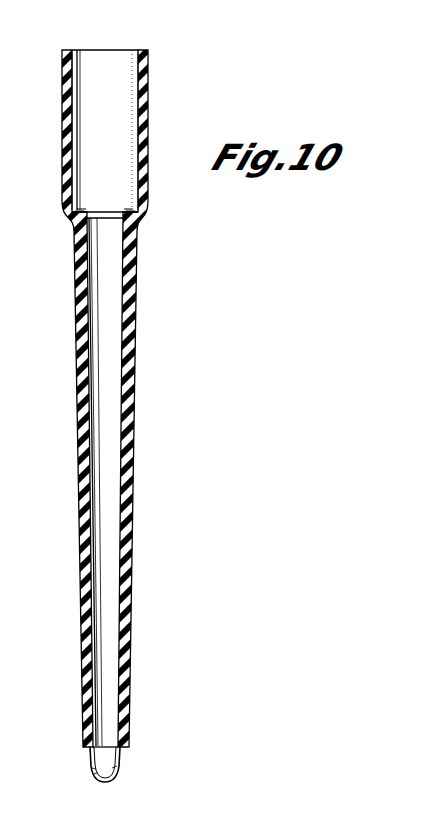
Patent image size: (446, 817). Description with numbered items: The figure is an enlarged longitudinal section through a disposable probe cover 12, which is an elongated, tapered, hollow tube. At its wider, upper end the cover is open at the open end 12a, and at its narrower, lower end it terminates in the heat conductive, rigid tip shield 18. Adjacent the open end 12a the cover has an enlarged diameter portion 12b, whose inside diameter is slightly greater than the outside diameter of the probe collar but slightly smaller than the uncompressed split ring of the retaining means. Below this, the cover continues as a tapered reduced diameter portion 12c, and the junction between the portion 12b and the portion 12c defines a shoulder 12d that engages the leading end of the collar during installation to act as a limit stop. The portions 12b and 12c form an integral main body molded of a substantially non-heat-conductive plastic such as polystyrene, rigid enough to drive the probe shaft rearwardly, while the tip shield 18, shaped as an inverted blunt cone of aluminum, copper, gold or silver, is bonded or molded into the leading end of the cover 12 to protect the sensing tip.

The probe cover 12 is at (135, 384).
The open end 12a is at (104, 50).
The enlarged diameter portion 12b is at (148, 84).
The tapered reduced diameter portion 12c is at (137, 292).
The shoulder 12d is at (85, 205).
The tip shield 18 is at (119, 768).